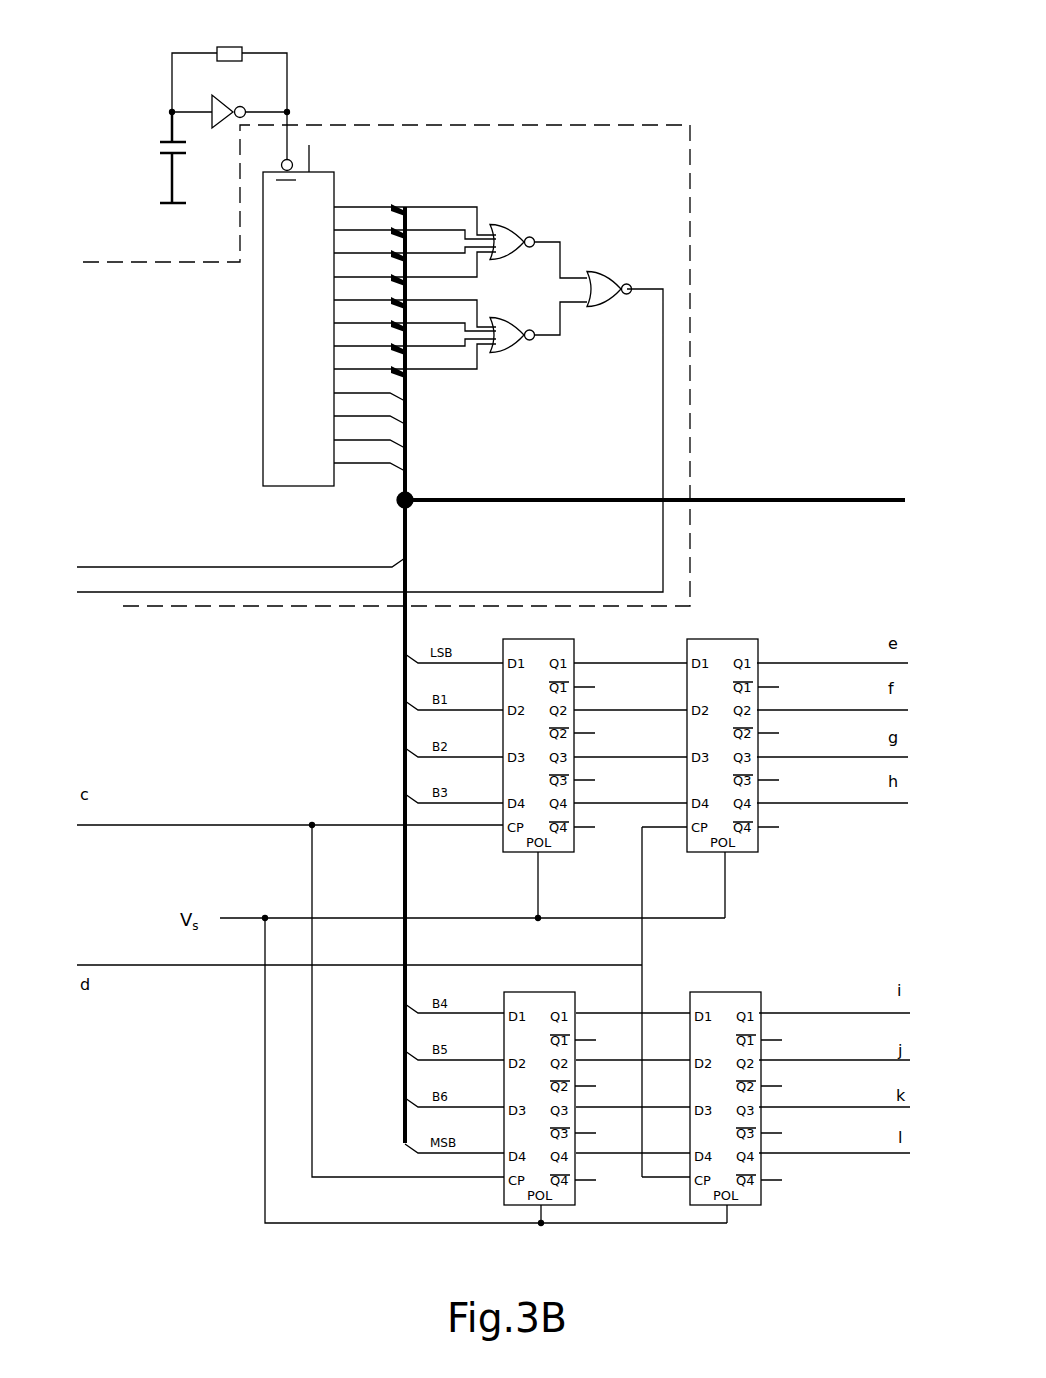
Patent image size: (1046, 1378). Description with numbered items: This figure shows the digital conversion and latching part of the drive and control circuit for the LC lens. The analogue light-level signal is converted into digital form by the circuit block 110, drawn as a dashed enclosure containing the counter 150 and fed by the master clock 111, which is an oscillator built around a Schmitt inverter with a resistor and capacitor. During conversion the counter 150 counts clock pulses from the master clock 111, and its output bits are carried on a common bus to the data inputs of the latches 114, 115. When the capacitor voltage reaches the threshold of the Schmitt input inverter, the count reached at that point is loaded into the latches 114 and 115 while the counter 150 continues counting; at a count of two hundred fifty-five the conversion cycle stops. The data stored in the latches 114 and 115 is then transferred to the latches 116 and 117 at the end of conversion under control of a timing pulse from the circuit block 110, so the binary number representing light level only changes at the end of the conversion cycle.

The circuit block 110 is at (491, 609).
The master clock 111 is at (292, 63).
The counter 150 is at (285, 321).
The latch 114 is at (562, 653).
The latch 115 is at (567, 1193).
The latch 116 is at (747, 655).
The latch 117 is at (755, 1192).